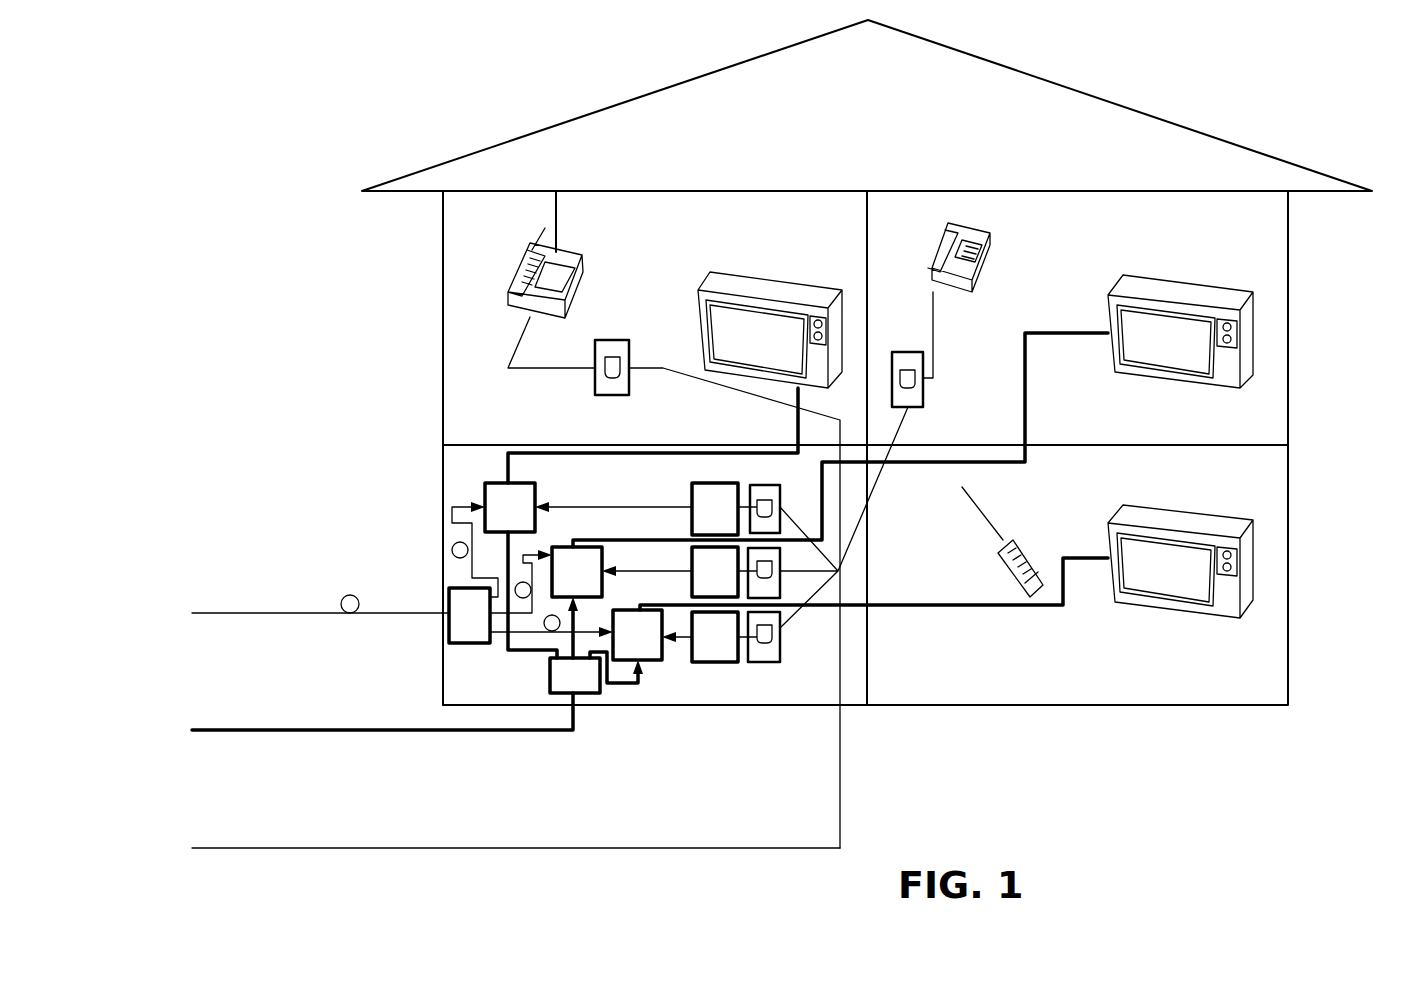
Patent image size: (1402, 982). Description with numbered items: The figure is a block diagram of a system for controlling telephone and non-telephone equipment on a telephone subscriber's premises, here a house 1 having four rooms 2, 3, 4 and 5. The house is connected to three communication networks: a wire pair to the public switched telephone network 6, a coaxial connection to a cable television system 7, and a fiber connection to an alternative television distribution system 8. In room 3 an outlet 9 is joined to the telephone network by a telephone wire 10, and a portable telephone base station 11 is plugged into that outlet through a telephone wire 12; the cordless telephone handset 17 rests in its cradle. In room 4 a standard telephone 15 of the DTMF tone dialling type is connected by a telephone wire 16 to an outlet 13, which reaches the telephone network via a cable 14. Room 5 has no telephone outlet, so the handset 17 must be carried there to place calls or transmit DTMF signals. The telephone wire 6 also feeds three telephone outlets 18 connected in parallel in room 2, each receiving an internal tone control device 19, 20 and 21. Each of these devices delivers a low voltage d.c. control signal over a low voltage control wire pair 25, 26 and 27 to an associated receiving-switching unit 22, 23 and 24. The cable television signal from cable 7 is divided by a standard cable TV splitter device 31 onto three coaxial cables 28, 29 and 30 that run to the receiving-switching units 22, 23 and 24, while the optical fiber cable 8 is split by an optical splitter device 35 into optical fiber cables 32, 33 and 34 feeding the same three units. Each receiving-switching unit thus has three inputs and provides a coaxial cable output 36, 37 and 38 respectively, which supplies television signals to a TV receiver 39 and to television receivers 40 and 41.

The house 1 is at (1112, 113).
The room 2 is at (773, 690).
The room 3 is at (468, 400).
The room 4 is at (1258, 265).
The room 5 is at (1000, 668).
The public switched telephone network 6 is at (268, 848).
The cable television system 7 is at (268, 730).
The alternative television distribution system 8 is at (252, 613).
The outlet 9 is at (595, 385).
The telephone wire 10 is at (655, 368).
The portable telephone base station 11 is at (527, 262).
The telephone wire 12 is at (513, 355).
The outlet 13 is at (927, 388).
The cable 14 is at (878, 480).
The standard telephone 15 is at (987, 248).
The telephone wire 16 is at (935, 338).
The cordless telephone handset 17 is at (1023, 550).
The telephone outlets 18 is at (770, 485).
The internal tone control device 19 is at (715, 509).
The internal tone control device 20 is at (715, 572).
The internal tone control device 21 is at (715, 637).
The receiving-switching unit 22 is at (510, 507).
The receiving-switching unit 23 is at (577, 572).
The receiving-switching unit 24 is at (637, 635).
The low voltage control wire pair 25 is at (648, 505).
The low voltage control wire pair 26 is at (677, 568).
The low voltage control wire pair 27 is at (685, 640).
The coaxial cable 28 is at (527, 653).
The coaxial cable 29 is at (582, 628).
The coaxial cable 30 is at (623, 685).
The cable TV splitter device 31 is at (575, 647).
The optical fiber cable 32 is at (452, 512).
The optical fiber cable 33 is at (528, 552).
The optical fiber cable 34 is at (497, 655).
The optical splitter device 35 is at (469, 615).
The coaxial cable output 36 is at (803, 400).
The coaxial cable output 37 is at (1030, 383).
The coaxial cable output 38 is at (907, 603).
The TV receiver 39 is at (792, 240).
The television receiver 40 is at (1188, 293).
The television receiver 41 is at (1168, 515).